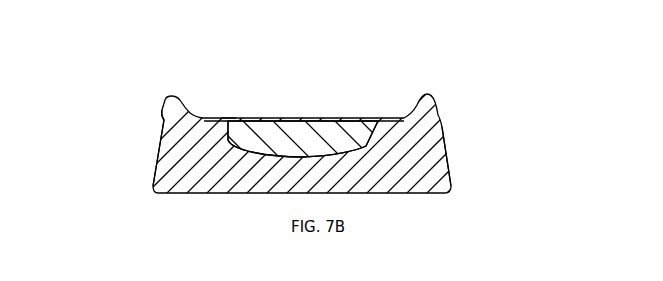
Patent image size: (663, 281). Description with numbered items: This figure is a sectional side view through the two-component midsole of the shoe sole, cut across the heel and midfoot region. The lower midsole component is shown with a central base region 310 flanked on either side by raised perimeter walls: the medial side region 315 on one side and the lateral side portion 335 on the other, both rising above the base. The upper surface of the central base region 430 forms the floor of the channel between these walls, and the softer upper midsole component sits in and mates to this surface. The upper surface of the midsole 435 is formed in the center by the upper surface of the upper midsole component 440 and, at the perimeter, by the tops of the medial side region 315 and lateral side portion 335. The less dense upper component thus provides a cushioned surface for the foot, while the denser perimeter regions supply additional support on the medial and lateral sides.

The central base region 310 is at (338, 181).
The medial side region 315 is at (446, 170).
The lateral side portion 335 is at (158, 163).
The upper surface of the central base region 430 is at (344, 150).
The upper surface of the midsole 435 is at (229, 116).
The upper surface of the upper midsole component 440 is at (301, 116).